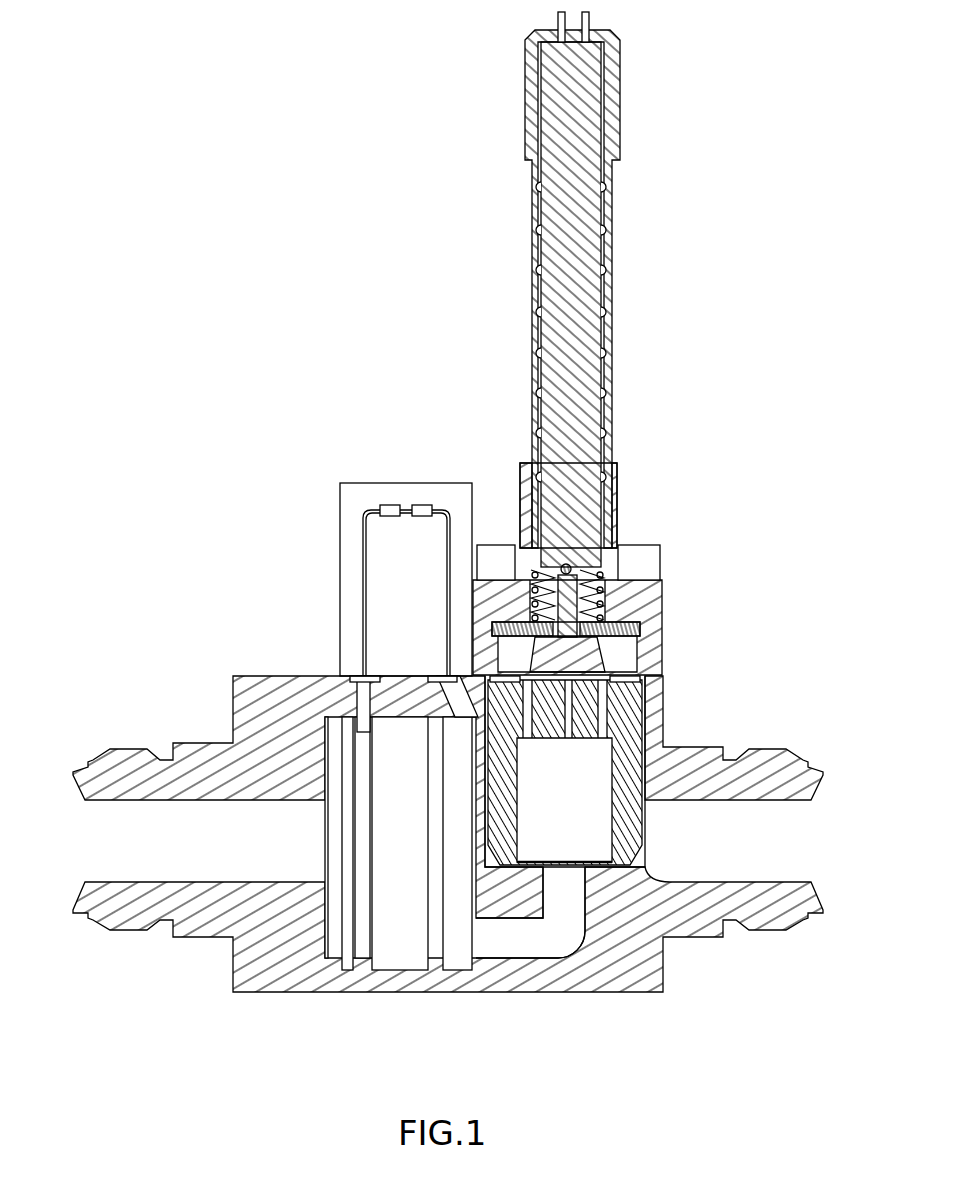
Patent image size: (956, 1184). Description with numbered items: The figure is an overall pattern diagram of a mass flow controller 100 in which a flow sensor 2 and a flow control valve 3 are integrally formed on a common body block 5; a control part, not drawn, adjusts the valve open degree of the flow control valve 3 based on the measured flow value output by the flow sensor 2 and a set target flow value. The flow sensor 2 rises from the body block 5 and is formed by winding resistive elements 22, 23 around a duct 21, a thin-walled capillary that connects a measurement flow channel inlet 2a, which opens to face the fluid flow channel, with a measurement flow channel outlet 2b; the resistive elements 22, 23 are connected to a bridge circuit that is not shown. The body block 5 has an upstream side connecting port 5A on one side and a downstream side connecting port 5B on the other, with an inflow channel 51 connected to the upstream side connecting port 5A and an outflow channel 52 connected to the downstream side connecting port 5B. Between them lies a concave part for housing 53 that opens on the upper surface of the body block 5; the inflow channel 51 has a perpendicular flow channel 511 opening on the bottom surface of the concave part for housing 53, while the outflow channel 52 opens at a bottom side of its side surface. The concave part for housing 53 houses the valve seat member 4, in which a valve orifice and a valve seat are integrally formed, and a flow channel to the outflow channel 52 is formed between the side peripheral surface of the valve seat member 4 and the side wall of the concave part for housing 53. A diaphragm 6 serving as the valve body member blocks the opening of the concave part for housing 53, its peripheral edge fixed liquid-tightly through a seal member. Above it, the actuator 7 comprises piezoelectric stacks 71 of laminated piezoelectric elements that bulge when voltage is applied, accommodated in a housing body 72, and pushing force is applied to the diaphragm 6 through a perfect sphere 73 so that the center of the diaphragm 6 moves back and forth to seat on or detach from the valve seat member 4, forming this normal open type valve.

The mass flow controller 100 is at (212, 183).
The flow sensor 2 is at (359, 549).
The measurement flow channel inlet 2a is at (360, 740).
The measurement flow channel outlet 2b is at (468, 736).
The duct 21 is at (360, 575).
The resistive element 22 is at (388, 505).
The resistive element 23 is at (420, 505).
The flow control valve 3 is at (659, 343).
The valve seat member 4 is at (655, 722).
The body block 5 is at (449, 879).
The upstream side connecting port 5A is at (74, 768).
The downstream side connecting port 5B is at (822, 768).
The inflow channel 51 is at (244, 855).
The outflow channel 52 is at (730, 855).
The perpendicular flow channel 511 is at (557, 912).
The concave part for housing 53 is at (640, 862).
The diaphragm 6 is at (660, 655).
The actuator 7 is at (661, 293).
The piezoelectric stack 71 is at (601, 392).
The housing body 72 is at (612, 277).
The perfect sphere 73 is at (568, 566).